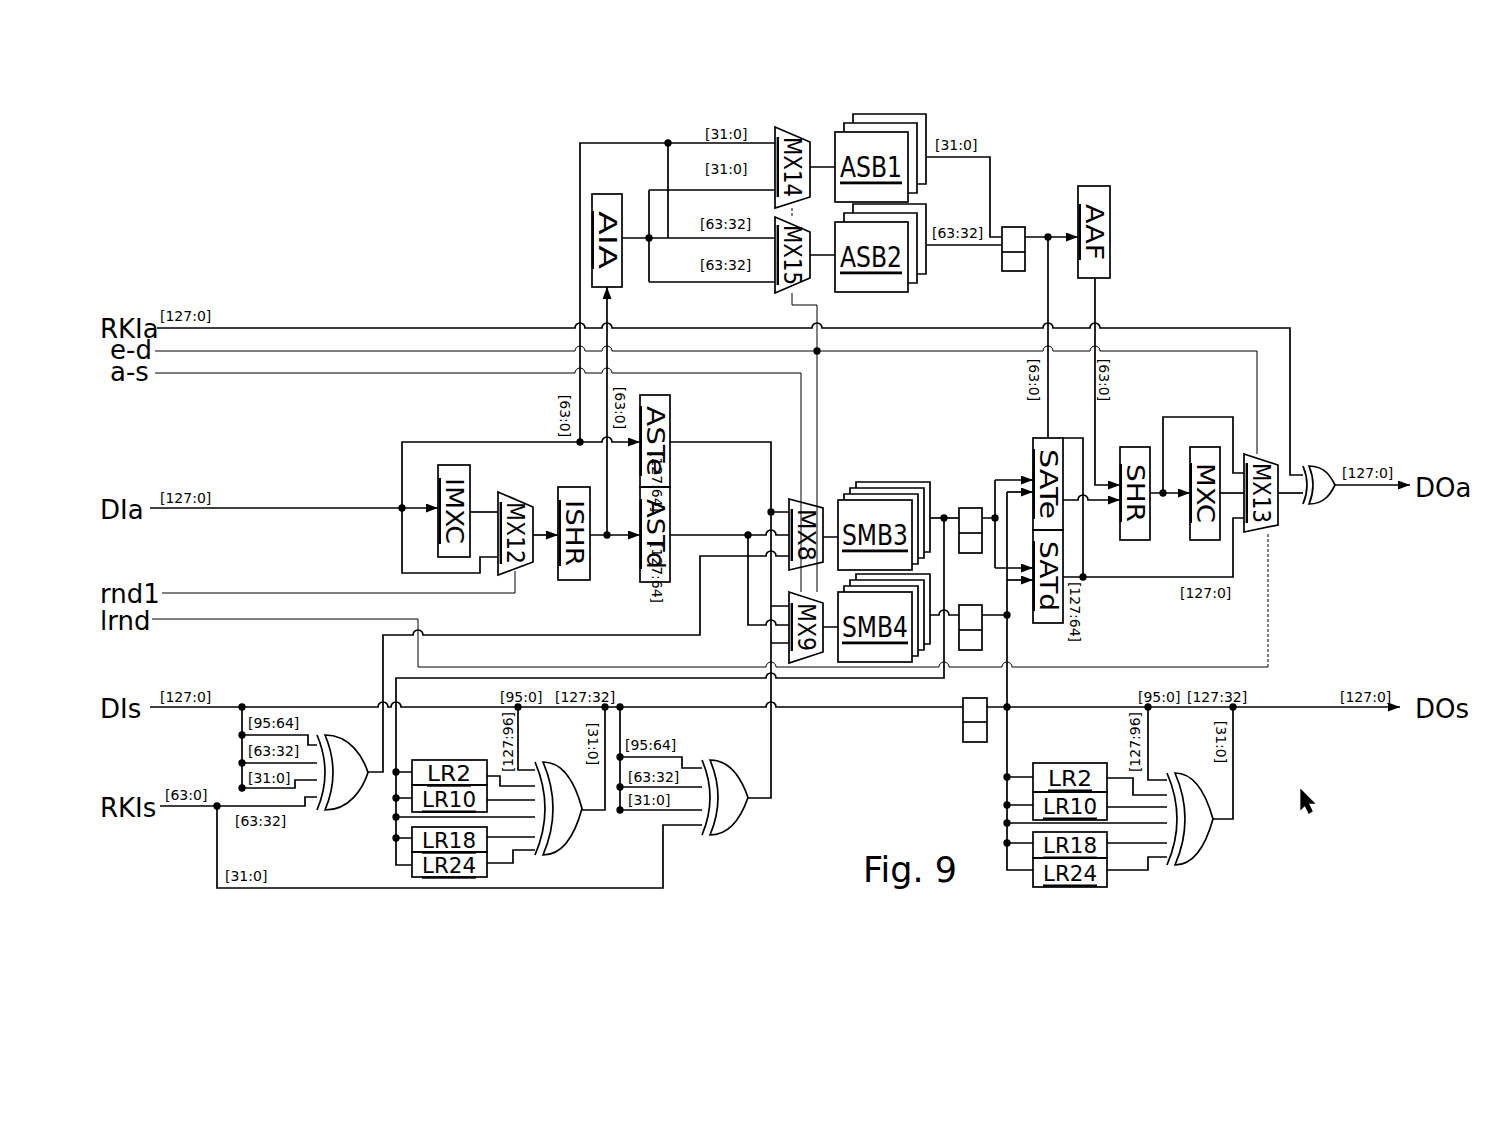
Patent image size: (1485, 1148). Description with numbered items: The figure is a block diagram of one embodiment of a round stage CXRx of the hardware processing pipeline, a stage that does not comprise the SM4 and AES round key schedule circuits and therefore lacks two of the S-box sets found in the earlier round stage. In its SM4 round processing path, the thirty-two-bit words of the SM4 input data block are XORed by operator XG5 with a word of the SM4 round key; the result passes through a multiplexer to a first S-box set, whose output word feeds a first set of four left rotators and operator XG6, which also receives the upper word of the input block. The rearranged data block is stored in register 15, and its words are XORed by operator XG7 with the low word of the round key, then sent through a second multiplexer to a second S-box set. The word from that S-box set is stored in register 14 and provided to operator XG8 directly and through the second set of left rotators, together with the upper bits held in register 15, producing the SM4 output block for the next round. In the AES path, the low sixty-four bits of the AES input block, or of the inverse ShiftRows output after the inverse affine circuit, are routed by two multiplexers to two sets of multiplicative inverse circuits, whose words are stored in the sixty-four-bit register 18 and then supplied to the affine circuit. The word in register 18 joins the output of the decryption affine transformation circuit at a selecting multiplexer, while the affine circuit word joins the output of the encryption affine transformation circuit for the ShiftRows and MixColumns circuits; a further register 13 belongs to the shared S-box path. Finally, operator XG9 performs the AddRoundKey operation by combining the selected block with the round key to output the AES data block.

The 64-bit register 18 is at (1010, 227).
The register 13 is at (962, 508).
The register 14 is at (978, 605).
The register 15 is at (972, 745).
The XOR operator XG5 is at (345, 812).
The XOR operator XG6 is at (578, 830).
The XOR operator XG7 is at (745, 825).
The XOR operator XG8 is at (1205, 852).
The XOR operator XG9 is at (1325, 506).
The round stage CXRx is at (1310, 812).